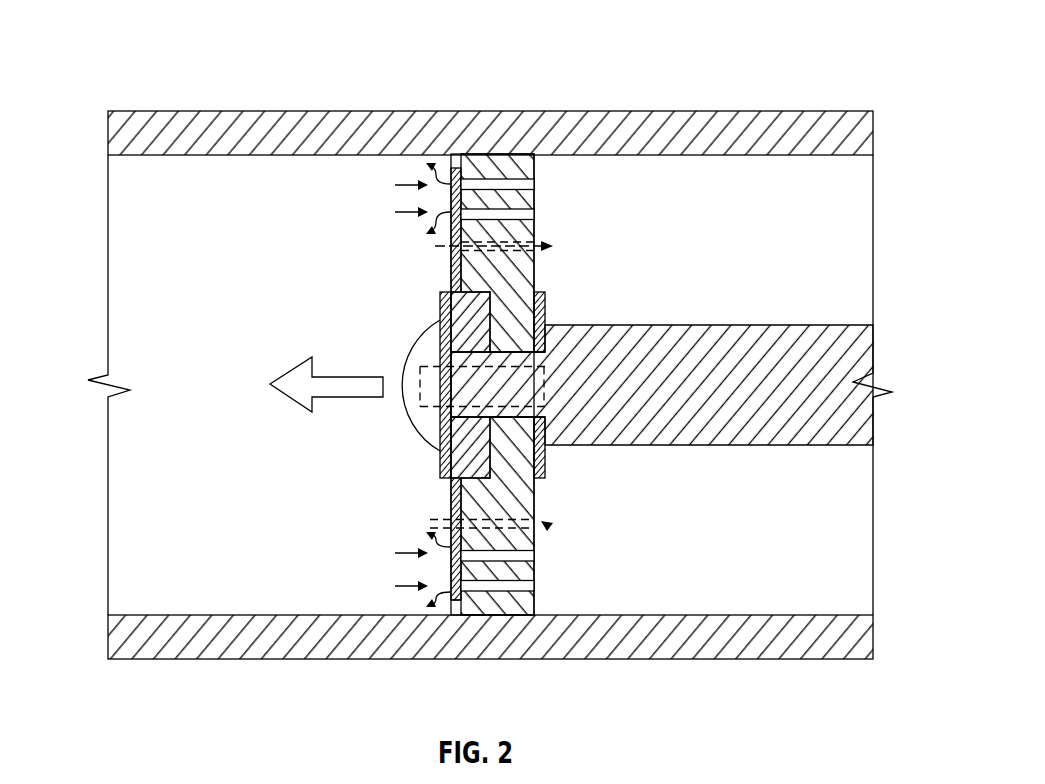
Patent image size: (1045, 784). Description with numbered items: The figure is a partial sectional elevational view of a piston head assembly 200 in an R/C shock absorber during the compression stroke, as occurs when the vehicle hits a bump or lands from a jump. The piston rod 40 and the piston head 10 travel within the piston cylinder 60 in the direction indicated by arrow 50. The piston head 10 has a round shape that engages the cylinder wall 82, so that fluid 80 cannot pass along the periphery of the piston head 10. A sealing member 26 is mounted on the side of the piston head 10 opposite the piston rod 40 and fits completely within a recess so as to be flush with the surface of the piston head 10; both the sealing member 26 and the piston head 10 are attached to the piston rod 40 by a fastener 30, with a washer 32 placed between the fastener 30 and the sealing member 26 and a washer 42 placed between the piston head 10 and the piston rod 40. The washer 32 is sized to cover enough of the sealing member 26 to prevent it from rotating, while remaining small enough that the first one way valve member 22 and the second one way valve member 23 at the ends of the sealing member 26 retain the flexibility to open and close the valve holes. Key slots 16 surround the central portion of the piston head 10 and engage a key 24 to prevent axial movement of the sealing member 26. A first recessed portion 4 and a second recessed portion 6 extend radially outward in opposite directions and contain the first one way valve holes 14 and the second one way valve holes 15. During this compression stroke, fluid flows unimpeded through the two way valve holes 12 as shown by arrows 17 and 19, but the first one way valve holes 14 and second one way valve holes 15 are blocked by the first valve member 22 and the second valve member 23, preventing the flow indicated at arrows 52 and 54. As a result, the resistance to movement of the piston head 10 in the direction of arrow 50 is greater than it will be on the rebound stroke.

The piston head assembly 200 is at (845, 40).
The piston cylinder 60 is at (747, 110).
The fluid 80 is at (857, 187).
The cylinder wall 82 is at (645, 156).
The piston rod 40 is at (775, 325).
The piston head 10 is at (534, 237).
The first recessed portion 4 is at (463, 230).
The sealing member 26 is at (455, 483).
The first one way valve holes 14 is at (534, 185).
The second one way valve holes 15 is at (534, 556).
The two way valve holes 12 is at (533, 262).
The arrow 17 is at (553, 246).
The arrow 19 is at (550, 527).
The washer 32 is at (440, 307).
The key 24 is at (490, 440).
The washer 42 is at (545, 315).
The key slots 16 is at (545, 462).
The fastener 30 is at (430, 337).
The arrow 50 is at (300, 400).
The arrows 52 is at (391, 173).
The first one way valve member 22 is at (453, 200).
The arrows 54 is at (392, 548).
The second one way valve member 23 is at (450, 573).
The second recessed portion 6 is at (455, 602).